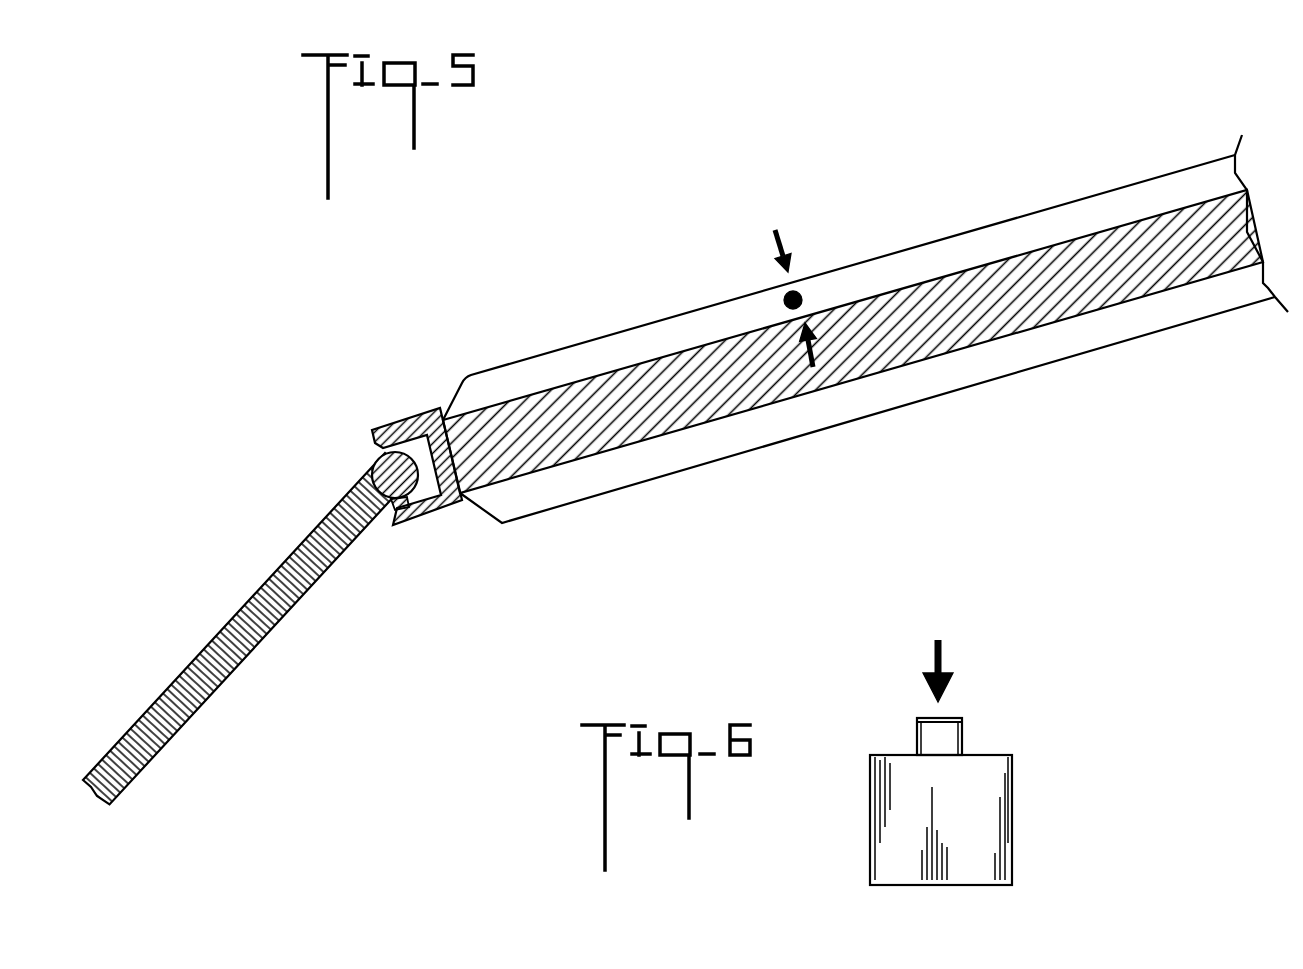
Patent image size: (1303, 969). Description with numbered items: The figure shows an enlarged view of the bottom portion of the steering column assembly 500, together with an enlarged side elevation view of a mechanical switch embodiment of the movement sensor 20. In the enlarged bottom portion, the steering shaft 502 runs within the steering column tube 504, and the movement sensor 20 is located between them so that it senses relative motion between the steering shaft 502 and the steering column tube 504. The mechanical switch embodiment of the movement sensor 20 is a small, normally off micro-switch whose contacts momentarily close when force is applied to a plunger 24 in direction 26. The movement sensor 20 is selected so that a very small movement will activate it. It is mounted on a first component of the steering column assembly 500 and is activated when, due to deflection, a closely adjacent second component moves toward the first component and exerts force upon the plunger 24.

In FIG. 5, the steering column assembly 500 is at (622, 238).
In FIG. 5, the steering column tube 504 is at (882, 257).
In FIG. 5, the steering shaft 502 is at (673, 434).
In FIG. 5, the movement sensor 20 is at (803, 296).
In FIG. 6, the movement sensor 20 is at (1012, 868).
In FIG. 6, the plunger 24 is at (963, 747).
In FIG. 6, the direction 26 is at (941, 663).